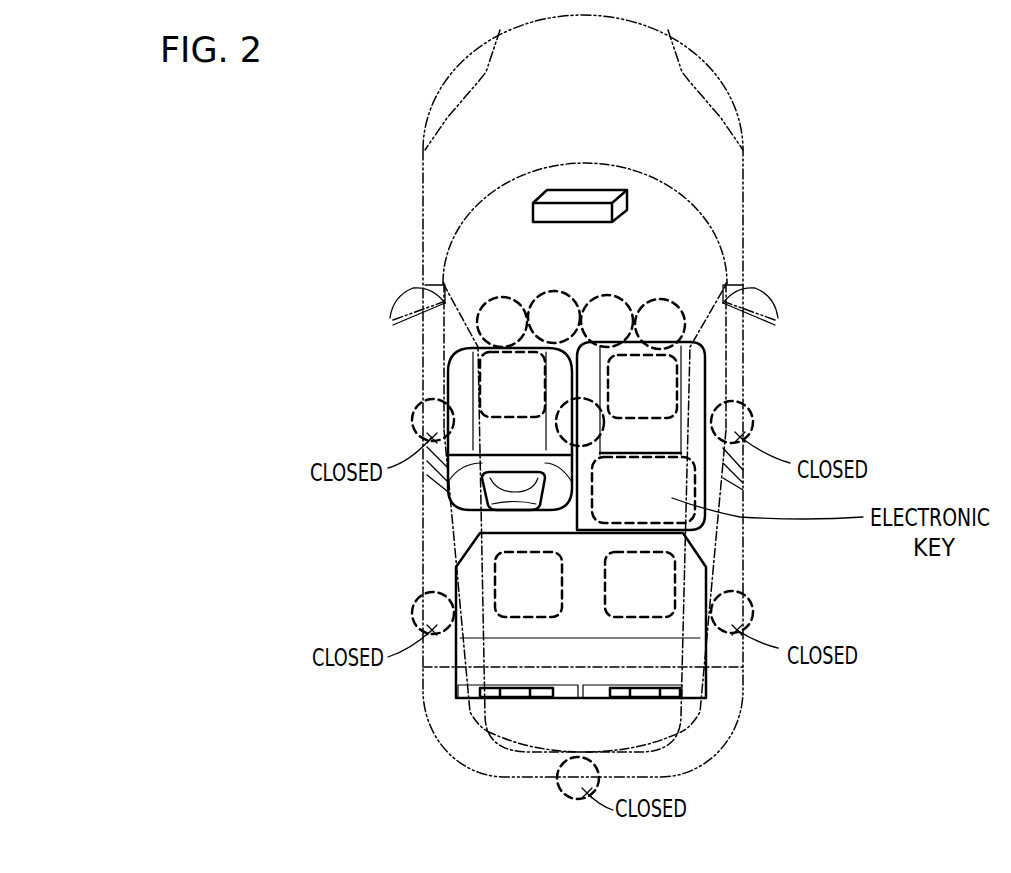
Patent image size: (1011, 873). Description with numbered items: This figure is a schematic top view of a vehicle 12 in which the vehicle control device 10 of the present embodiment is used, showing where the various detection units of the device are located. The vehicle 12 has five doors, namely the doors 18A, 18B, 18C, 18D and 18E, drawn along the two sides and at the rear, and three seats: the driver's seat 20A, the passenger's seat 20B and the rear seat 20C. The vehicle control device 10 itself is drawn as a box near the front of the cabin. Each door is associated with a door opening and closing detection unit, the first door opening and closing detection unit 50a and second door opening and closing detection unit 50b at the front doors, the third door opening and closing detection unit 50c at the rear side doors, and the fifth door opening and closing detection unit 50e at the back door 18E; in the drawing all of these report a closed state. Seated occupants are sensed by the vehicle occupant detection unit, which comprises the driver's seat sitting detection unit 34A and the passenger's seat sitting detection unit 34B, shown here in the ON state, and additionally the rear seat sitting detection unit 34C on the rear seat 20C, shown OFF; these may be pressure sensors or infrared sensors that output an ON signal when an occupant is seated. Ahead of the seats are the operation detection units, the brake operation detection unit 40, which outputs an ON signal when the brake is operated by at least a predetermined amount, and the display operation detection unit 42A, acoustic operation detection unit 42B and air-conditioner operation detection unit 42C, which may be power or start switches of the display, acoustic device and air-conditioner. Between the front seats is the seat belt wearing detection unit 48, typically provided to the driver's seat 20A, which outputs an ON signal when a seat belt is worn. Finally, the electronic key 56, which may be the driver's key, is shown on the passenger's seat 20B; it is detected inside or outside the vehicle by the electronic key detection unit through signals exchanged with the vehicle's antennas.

The vehicle 12 is at (303, 142).
The vehicle control device 10 is at (575, 190).
The air-conditioner operation detection unit 42C is at (483, 296).
The acoustic operation detection unit 42B is at (549, 291).
The display operation detection unit 42A is at (611, 295).
The brake operation detection unit 40 is at (663, 299).
The passenger's seat sitting detection unit 34B is at (476, 350).
The driver's seat sitting detection unit 34A is at (705, 352).
The rear seat sitting detection unit 34C is at (490, 582).
The passenger's seat 20B is at (460, 390).
The driver's seat 20A is at (697, 385).
The rear seat 20C is at (697, 673).
The door 18B is at (433, 387).
The door 18A is at (732, 394).
The door 18D is at (440, 553).
The door 18C is at (730, 552).
The door 18E is at (643, 728).
The second door opening and closing detection unit 50b is at (413, 423).
The first door opening and closing detection unit 50a is at (753, 425).
The third door opening and closing detection unit 50c is at (413, 613).
The fifth door opening and closing detection unit 50e is at (561, 791).
The seat belt wearing detection unit 48 is at (556, 430).
The electronic key 56 is at (705, 497).